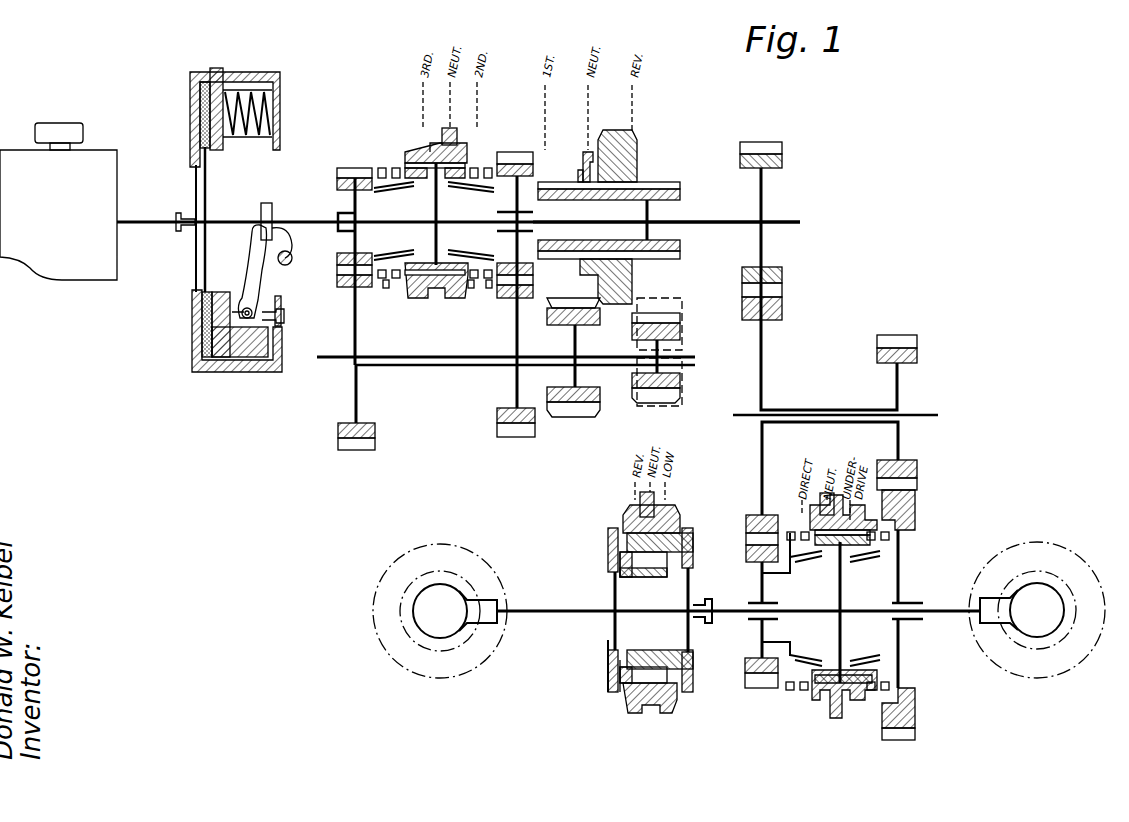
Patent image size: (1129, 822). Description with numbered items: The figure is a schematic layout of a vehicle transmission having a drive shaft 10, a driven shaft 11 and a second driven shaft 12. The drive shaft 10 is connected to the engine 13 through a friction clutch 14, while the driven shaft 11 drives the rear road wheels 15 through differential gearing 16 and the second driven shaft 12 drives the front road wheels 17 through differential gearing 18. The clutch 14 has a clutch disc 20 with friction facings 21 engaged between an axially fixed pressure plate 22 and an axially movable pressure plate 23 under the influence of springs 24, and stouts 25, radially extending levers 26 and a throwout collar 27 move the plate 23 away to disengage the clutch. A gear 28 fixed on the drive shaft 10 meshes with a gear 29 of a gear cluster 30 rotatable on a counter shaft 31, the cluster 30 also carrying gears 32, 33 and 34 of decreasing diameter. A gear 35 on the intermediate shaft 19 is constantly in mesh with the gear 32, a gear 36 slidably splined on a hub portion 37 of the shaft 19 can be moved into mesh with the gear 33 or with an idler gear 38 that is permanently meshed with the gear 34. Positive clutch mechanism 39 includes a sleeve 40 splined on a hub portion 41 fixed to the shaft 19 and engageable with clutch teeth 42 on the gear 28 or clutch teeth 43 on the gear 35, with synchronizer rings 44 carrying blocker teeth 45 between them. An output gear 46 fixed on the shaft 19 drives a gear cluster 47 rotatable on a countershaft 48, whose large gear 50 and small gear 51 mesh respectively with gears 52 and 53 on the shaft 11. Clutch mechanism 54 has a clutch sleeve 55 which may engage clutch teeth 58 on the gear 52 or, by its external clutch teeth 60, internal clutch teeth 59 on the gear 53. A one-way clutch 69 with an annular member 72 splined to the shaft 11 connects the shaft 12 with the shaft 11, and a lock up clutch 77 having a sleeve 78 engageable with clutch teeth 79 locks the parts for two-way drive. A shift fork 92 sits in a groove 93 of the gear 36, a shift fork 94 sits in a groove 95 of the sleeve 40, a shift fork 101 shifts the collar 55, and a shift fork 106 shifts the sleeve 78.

The drive shaft 10 is at (220, 222).
The driven shaft 11 is at (950, 608).
The second driven shaft 12 is at (530, 611).
The driving engine 13 is at (68, 200).
The friction clutch 14 is at (247, 61).
The rear road wheels 15 is at (1058, 542).
The differential gearing 16 is at (1037, 637).
The front road wheels 17 is at (439, 545).
The differential gearing 18 is at (437, 638).
The intermediate shaft 19 is at (788, 222).
The clutch disc 20 is at (208, 185).
The annular friction facings 21 is at (204, 118).
The axially fixed pressure plate 22 is at (199, 92).
The axially movable pressure plate 23 is at (222, 150).
The springs 24 is at (268, 108).
The stouts 25 is at (245, 348).
The radially extending levers 26 is at (246, 280).
The throwout collar 27 is at (268, 204).
The gear 28 is at (344, 168).
The gear 29 is at (362, 448).
The gear cluster 30 is at (485, 369).
The counter shaft 31 is at (335, 360).
The gear 32 is at (519, 437).
The gear 33 is at (566, 414).
The gear 34 is at (670, 400).
The gear 35 is at (520, 152).
The gear 36 is at (630, 135).
The hub portion 37 is at (681, 193).
The idler gear 38 is at (668, 300).
The positive clutch mechanism 39 is at (426, 300).
The sleeve 40 is at (458, 148).
The hub portion 41 is at (424, 183).
The clutch teeth 42 is at (384, 288).
The clutch teeth 43 is at (486, 288).
The synchronizer rings 44 is at (408, 250).
The blocker teeth 45 is at (470, 288).
The gear 46 is at (775, 146).
The gear cluster 47 is at (808, 408).
The countershaft 48 is at (920, 414).
The gear 50 is at (775, 306).
The gear 51 is at (900, 338).
The gear 52 is at (746, 554).
The gear 53 is at (917, 498).
The clutch mechanism 54 is at (803, 705).
The clutch sleeve 55 is at (818, 722).
The clutch teeth 58 is at (790, 690).
The internal clutch teeth 59 is at (912, 705).
The external clutch teeth 60 is at (852, 708).
The one-way clutch 69 is at (625, 558).
The annular member 72 is at (693, 680).
The lock up clutch 77 is at (618, 697).
The sleeve 78 is at (665, 710).
The clutch teeth 79 is at (605, 688).
The shift fork 92 is at (590, 150).
The groove 93 is at (580, 165).
The shift fork 94 is at (450, 135).
The groove 95 is at (432, 138).
The shift fork 101 is at (818, 500).
The shift fork 106 is at (660, 504).